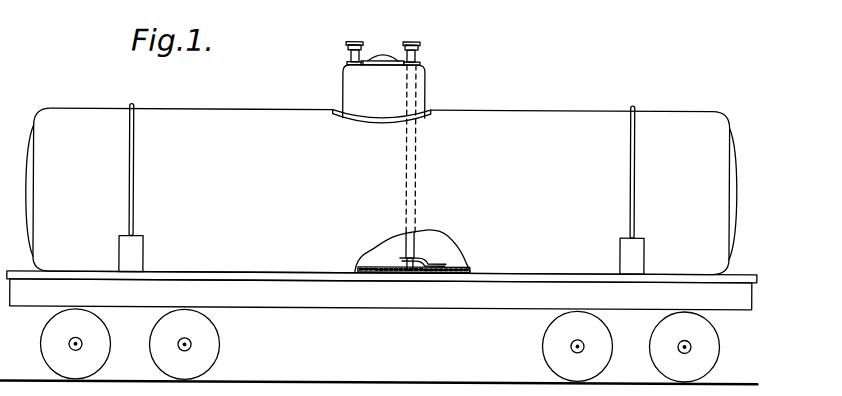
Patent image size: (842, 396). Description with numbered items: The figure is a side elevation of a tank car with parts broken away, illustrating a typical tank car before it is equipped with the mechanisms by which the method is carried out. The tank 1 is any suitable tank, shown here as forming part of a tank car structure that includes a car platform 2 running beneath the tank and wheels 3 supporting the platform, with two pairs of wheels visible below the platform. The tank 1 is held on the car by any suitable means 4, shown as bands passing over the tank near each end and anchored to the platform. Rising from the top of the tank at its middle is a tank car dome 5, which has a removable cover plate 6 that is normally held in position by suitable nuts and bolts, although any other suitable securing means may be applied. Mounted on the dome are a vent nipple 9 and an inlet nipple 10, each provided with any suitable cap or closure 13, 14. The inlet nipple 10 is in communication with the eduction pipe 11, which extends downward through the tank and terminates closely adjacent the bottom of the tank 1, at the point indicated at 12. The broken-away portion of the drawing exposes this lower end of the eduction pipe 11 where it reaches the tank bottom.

The tank 1 is at (538, 118).
The car platform 2 is at (498, 302).
The wheels 3 is at (162, 325).
The means for holding the tank on the car 4 is at (134, 174).
The tank car dome 5 is at (345, 80).
The removable cover plate 6 is at (382, 53).
The vent nipple 9 is at (348, 54).
The inlet nipple 10 is at (417, 55).
The eduction pipe 11 is at (414, 245).
The eduction pipe termination 12 is at (412, 266).
The cap or closure 13 is at (357, 42).
The cap or closure 14 is at (408, 38).